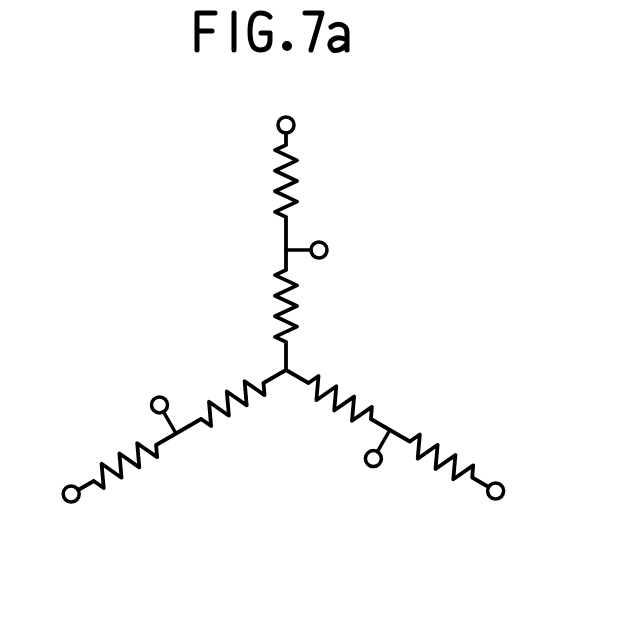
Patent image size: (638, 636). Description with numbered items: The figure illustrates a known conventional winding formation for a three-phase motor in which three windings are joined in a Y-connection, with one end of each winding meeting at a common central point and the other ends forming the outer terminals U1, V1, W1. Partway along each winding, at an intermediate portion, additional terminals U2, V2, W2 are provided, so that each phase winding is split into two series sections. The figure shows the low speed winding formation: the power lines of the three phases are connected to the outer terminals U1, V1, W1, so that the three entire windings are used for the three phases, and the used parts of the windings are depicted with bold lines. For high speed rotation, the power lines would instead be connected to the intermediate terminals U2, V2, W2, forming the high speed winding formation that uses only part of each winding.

The terminal U1 is at (305, 109).
The intermediate terminal U2 is at (372, 262).
The terminal V1 is at (63, 534).
The intermediate terminal V2 is at (163, 393).
The terminal W1 is at (545, 534).
The intermediate terminal W2 is at (371, 507).